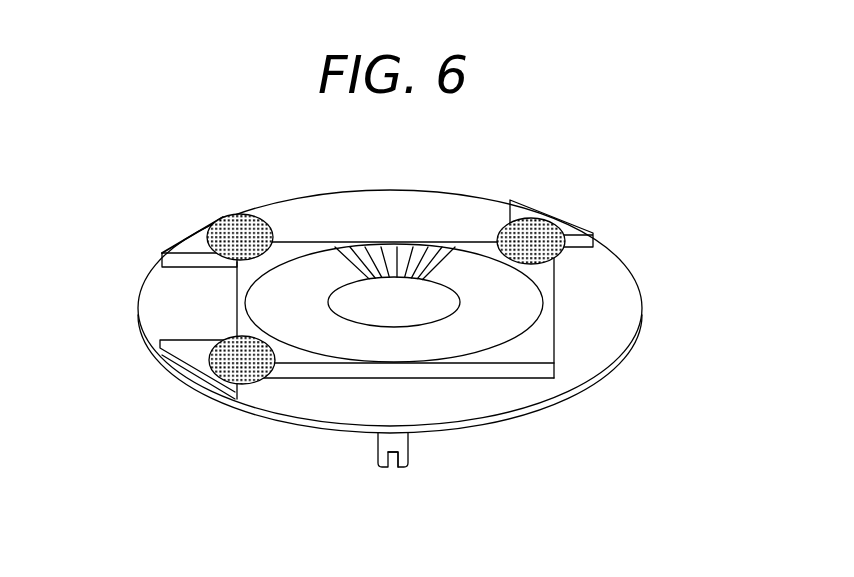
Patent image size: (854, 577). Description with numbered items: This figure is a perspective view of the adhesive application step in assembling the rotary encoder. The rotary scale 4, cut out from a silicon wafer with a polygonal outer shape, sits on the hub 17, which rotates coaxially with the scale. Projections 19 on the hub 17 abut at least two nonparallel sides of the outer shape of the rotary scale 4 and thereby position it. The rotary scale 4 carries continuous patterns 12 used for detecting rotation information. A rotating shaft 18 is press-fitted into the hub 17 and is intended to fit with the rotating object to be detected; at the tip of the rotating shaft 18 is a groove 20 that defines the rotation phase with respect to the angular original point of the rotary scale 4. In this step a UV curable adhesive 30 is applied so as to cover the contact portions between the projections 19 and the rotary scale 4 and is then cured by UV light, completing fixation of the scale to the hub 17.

The rotary scale 4 is at (244, 277).
The continuous patterns 12 is at (484, 294).
The hub 17 is at (618, 318).
The rotating shaft 18 is at (377, 457).
The projections 19 is at (190, 245).
The groove 20 is at (394, 468).
The UV curable adhesive 30 is at (231, 222).